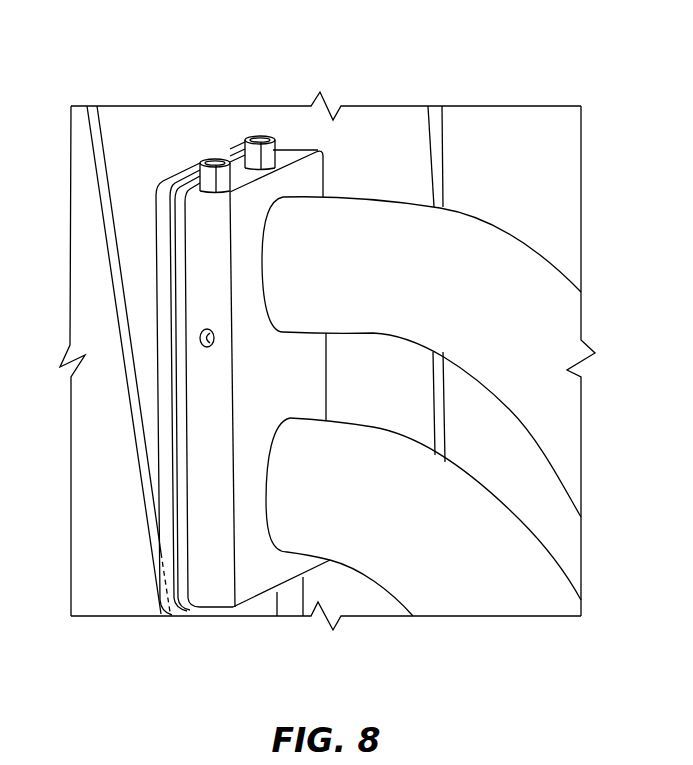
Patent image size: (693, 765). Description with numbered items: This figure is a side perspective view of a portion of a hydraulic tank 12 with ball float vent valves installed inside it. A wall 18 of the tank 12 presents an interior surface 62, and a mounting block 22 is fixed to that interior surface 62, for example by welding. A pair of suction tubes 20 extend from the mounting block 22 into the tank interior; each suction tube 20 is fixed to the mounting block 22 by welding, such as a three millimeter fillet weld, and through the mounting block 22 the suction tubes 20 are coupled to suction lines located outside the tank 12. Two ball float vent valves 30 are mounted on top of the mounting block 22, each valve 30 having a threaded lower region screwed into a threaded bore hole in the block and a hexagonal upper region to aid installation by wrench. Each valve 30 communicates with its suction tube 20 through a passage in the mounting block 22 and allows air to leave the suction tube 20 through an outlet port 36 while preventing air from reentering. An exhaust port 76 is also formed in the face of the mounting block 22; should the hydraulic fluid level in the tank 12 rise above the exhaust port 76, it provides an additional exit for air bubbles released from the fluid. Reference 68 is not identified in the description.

The tank 12 is at (555, 540).
The wall 18 is at (413, 172).
The suction tube 20 is at (513, 283).
The mounting block 22 is at (318, 170).
The ball float vent valve 30 is at (203, 160).
The outlet port 36 is at (248, 137).
The interior surface 62 is at (128, 128).
The bracket 68 is at (305, 150).
The exhaust port 76 is at (200, 340).